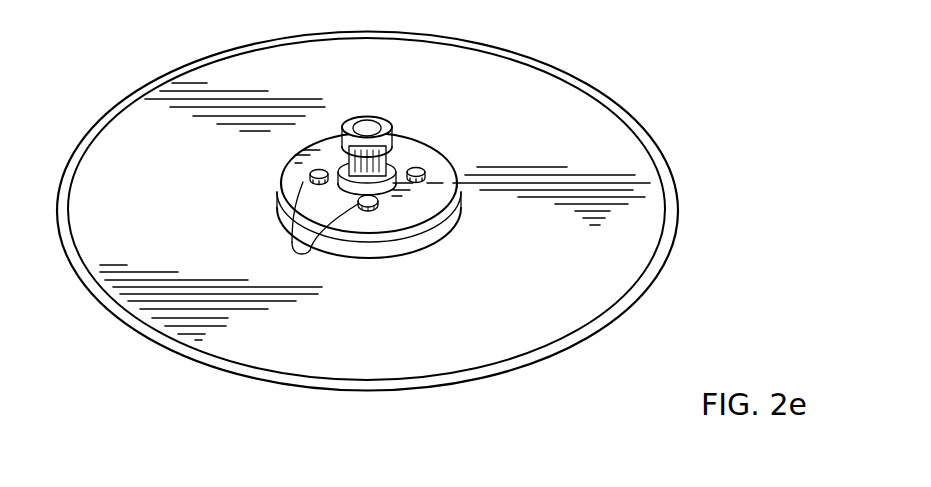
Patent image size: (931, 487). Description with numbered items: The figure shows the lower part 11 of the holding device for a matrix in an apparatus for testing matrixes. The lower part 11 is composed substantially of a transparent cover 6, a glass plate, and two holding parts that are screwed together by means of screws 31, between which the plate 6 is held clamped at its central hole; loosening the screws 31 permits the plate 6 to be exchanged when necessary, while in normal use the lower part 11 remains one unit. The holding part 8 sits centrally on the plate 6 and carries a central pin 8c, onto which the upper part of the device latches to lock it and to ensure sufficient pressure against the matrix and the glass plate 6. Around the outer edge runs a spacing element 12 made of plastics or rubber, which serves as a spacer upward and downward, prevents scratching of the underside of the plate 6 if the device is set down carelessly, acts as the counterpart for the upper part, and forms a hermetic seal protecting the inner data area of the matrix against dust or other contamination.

The transparent cover 6 is at (522, 332).
The holding part 8 is at (416, 229).
The central pin 8c is at (392, 121).
The lower part 11 is at (213, 390).
The spacing element 12 is at (633, 121).
The screw 31 is at (290, 243).